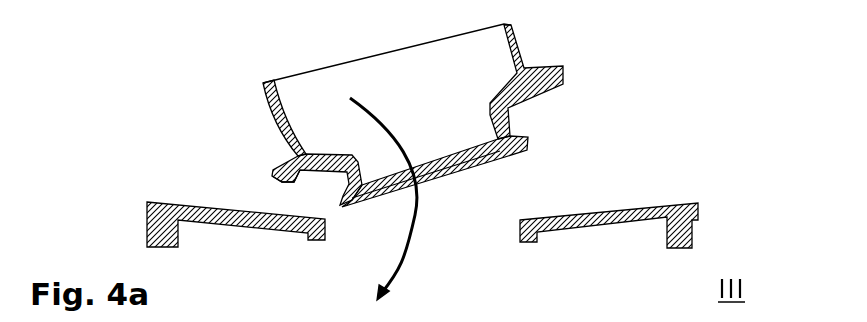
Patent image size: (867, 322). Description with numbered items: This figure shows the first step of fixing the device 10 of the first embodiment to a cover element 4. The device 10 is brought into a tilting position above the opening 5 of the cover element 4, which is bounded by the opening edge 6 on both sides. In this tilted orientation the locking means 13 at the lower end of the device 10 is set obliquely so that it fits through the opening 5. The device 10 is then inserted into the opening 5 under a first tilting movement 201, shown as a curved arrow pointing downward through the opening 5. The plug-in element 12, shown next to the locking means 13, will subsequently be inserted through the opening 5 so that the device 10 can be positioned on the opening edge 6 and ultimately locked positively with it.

The device 10 is at (542, 50).
The plug-in element 12 is at (344, 152).
The locking means 13 is at (537, 135).
The first tilting movement 201 is at (395, 135).
The cover element 4 is at (577, 215).
The opening 5 is at (478, 256).
The opening edge 6 is at (312, 223).